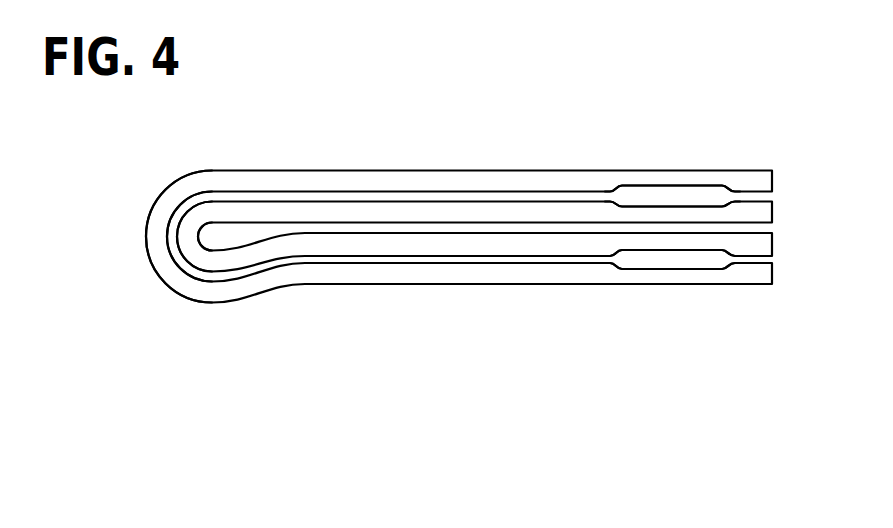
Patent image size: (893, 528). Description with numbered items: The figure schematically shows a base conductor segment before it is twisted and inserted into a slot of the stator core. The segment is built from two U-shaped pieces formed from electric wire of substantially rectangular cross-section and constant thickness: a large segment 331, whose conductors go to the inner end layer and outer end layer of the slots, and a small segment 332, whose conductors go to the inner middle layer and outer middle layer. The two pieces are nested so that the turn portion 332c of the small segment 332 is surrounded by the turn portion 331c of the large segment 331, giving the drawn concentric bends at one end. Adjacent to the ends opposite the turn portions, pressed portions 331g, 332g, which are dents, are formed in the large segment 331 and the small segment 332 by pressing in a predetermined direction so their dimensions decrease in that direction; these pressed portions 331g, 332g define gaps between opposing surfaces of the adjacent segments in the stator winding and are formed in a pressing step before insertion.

The large segment 331 is at (397, 277).
The small segment 332 is at (481, 243).
The turn portion of large segment 331c is at (162, 266).
The turn portion of small segment 332c is at (195, 215).
The pressed portion of large segment 331g is at (658, 186).
The pressed portion of small segment 332g is at (697, 203).